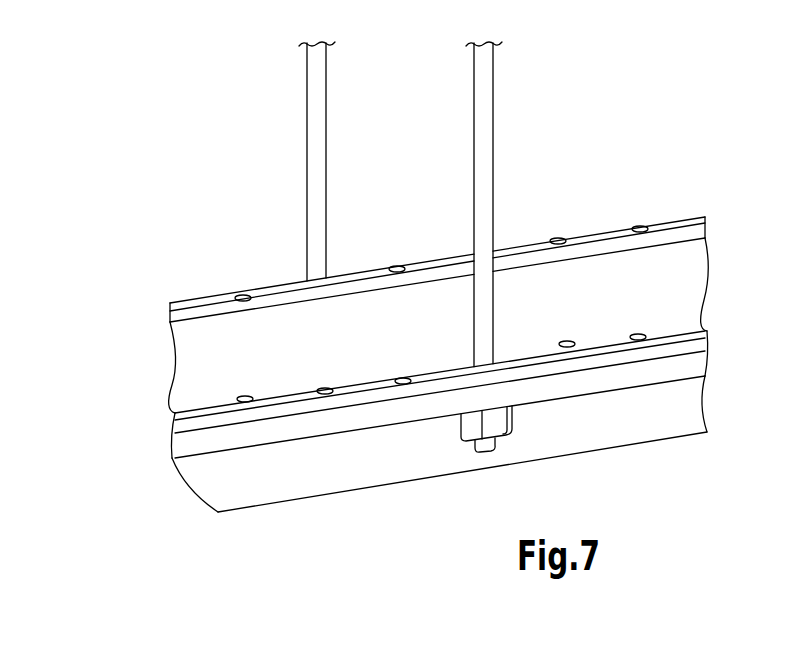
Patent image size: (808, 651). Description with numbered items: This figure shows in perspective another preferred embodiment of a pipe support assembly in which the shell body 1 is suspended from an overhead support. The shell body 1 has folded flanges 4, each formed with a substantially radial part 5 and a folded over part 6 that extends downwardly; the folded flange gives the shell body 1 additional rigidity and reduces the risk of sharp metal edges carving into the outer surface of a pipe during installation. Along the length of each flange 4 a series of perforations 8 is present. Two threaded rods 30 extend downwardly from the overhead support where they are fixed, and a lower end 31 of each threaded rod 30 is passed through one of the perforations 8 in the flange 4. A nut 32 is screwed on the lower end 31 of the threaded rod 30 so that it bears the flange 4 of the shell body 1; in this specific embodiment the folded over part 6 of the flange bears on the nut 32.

The shell body 1 is at (690, 282).
The flange 4 is at (682, 220).
The radial part 5 is at (355, 278).
The folded over part 6 is at (658, 368).
The perforations 8 is at (236, 287).
The threaded rod 30 is at (313, 142).
The lower end 31 is at (500, 447).
The nut 32 is at (473, 425).